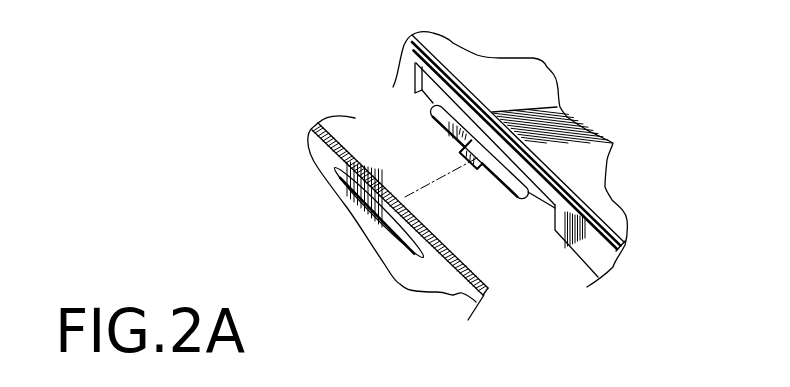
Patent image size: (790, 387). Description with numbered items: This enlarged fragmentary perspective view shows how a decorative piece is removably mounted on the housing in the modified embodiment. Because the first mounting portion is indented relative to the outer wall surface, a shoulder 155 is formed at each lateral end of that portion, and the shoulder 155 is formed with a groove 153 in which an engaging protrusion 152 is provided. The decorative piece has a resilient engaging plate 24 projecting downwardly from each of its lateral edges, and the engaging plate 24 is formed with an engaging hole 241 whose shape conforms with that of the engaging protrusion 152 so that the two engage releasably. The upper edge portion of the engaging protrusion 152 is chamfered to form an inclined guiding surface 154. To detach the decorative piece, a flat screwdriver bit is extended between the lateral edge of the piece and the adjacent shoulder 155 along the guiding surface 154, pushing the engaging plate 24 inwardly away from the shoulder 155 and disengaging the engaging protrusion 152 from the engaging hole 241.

The engaging plate 24 is at (330, 160).
The engaging hole 241 is at (375, 232).
The engaging protrusion 152 is at (517, 196).
The groove 153 is at (542, 210).
The inclined guiding surface 154 is at (479, 162).
The shoulder 155 is at (585, 238).